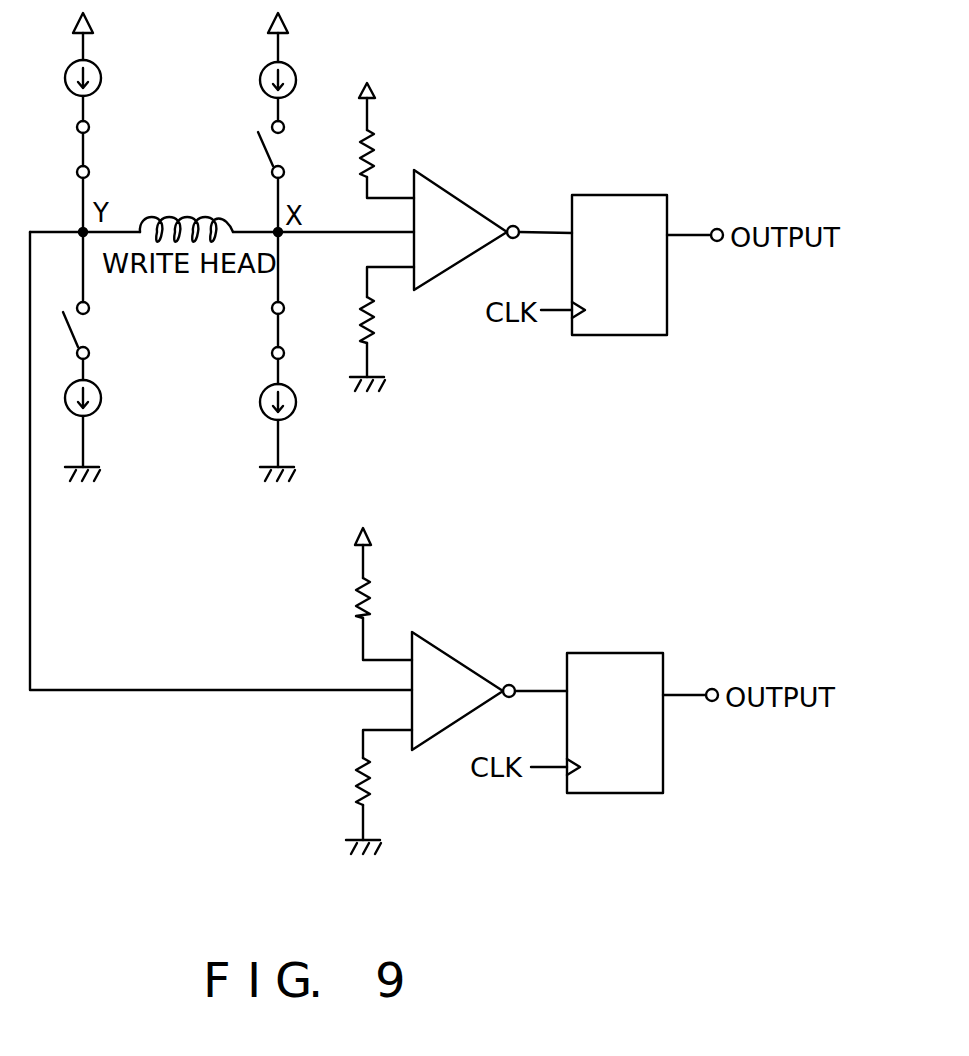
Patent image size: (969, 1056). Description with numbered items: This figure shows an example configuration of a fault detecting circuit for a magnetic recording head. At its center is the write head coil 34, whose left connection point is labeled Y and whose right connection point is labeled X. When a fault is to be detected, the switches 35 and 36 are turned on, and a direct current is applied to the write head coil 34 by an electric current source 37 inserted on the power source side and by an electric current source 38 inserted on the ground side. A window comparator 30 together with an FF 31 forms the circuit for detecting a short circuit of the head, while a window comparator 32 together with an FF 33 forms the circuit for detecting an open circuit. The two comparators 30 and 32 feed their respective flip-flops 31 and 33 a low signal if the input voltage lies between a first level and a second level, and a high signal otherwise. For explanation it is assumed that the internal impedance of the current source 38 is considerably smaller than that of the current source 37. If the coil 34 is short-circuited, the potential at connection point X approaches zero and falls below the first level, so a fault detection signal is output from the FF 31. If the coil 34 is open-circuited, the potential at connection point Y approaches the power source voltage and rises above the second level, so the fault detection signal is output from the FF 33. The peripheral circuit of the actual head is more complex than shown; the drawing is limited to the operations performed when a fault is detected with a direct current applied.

The window comparator 30 is at (452, 195).
The FF (flip-flop) 31 is at (667, 307).
The window comparator 32 is at (448, 656).
The FF (flip-flop) 33 is at (663, 758).
The write head coil 34 is at (176, 222).
The switch 35 is at (86, 150).
The switch 36 is at (278, 330).
The electric current source 37 is at (100, 76).
The electric current source 38 is at (262, 398).